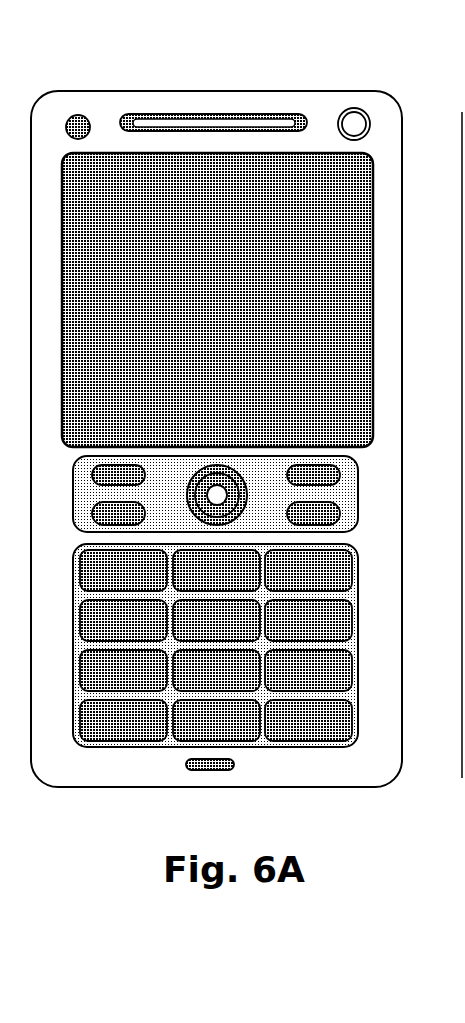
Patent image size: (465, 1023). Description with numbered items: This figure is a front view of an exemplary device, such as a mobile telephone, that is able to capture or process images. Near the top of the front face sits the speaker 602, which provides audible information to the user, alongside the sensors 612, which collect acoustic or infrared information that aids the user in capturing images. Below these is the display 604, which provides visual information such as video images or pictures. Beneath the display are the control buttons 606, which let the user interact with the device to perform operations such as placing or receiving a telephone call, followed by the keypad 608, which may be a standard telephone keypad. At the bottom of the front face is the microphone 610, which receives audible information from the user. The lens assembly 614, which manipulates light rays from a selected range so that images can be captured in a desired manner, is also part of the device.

The speaker 602 is at (198, 116).
The display 604 is at (322, 153).
The control buttons 606 is at (358, 496).
The keypad 608 is at (328, 645).
The microphone 610 is at (234, 765).
The sensors 612 is at (357, 128).
The lens assembly 614 is at (333, 787).